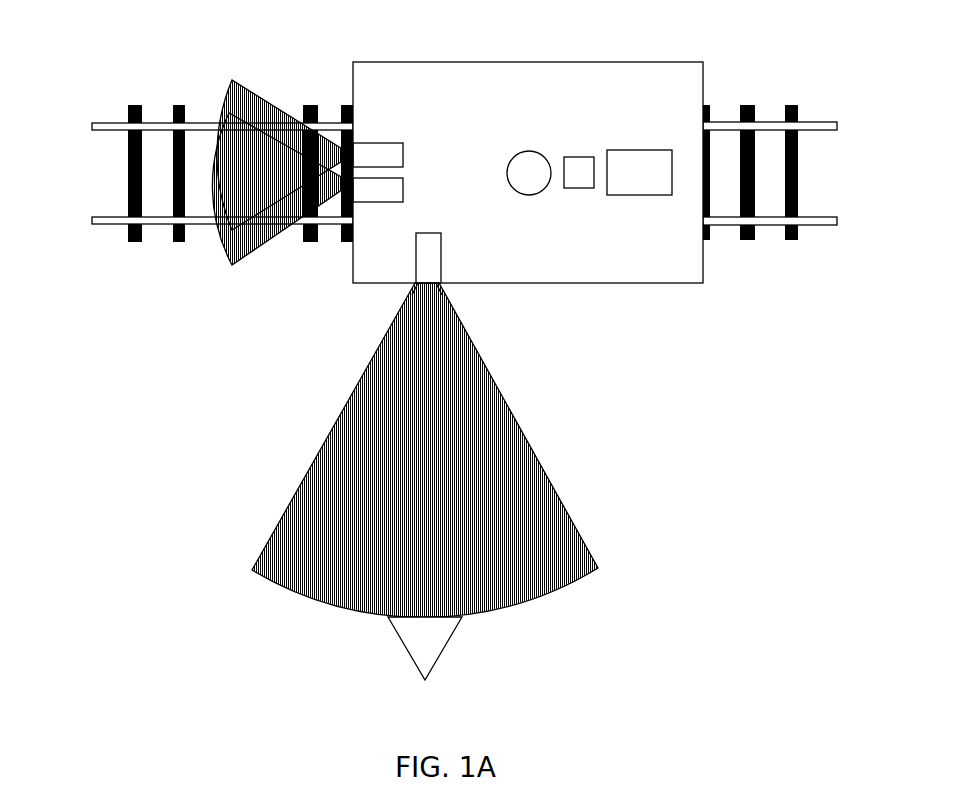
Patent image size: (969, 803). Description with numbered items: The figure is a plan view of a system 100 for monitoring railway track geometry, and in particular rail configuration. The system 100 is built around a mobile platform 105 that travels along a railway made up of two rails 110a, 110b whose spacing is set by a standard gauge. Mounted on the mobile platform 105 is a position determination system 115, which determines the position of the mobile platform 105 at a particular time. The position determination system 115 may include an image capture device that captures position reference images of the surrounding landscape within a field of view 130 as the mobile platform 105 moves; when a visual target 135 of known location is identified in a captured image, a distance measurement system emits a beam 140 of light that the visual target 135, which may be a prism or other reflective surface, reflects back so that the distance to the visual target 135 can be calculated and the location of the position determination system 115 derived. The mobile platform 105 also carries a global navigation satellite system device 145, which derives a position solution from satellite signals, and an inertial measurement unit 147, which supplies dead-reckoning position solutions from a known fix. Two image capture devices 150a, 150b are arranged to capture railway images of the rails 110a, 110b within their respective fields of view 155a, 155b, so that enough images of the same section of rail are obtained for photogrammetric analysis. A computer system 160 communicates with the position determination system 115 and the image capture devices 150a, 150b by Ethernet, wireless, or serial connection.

The system 100 is at (726, 470).
The mobile platform 105 is at (536, 62).
The rail 110a is at (117, 123).
The rail 110b is at (117, 217).
The position determination system 115 is at (441, 262).
The field of view 130 is at (530, 447).
The visual target 135 is at (447, 650).
The beam 140 is at (428, 312).
The global navigation satellite system device 145 is at (529, 151).
The inertial measurement unit 147 is at (577, 190).
The image capture device 150a is at (403, 158).
The image capture device 150b is at (403, 193).
The first forward sensor field of view 155a is at (247, 87).
The second forward sensor field of view 155b is at (257, 250).
The computer system 160 is at (640, 150).